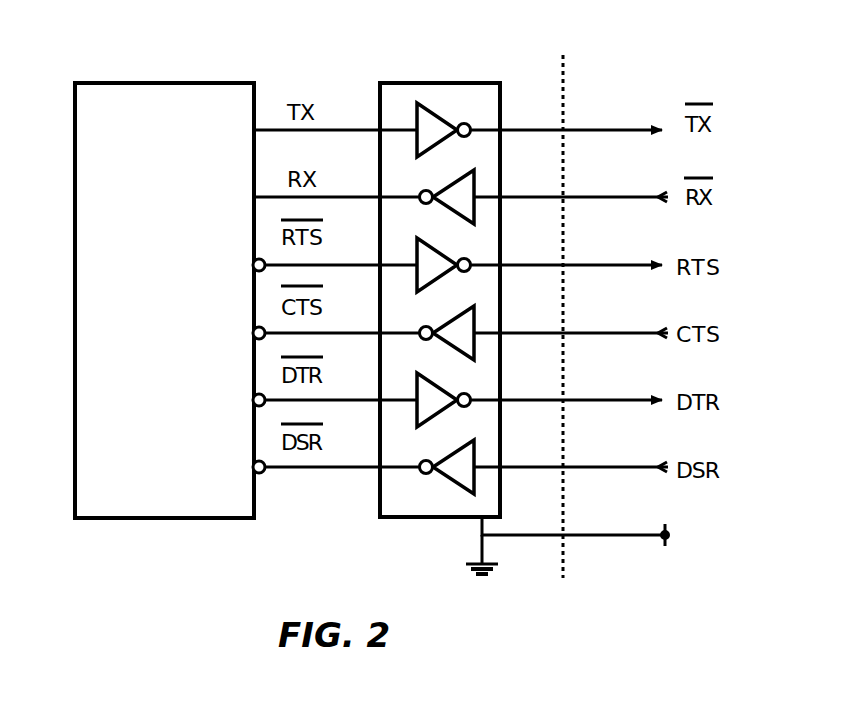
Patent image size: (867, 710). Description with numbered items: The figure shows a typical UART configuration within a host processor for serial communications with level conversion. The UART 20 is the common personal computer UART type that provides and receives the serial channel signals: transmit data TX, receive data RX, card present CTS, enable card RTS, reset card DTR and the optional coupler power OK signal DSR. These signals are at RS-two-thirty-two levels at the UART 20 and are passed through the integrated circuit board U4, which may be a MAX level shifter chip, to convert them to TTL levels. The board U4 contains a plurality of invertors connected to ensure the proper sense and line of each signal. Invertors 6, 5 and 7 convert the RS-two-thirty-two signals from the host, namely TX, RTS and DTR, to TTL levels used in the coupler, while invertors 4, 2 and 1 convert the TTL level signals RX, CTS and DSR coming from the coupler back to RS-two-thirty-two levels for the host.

The UART 20 is at (199, 518).
The integrated circuit board U4 is at (447, 518).
The invertor 6 is at (444, 115).
The invertor 4 is at (455, 178).
The invertor 5 is at (433, 252).
The invertor 2 is at (453, 316).
The invertor 7 is at (419, 378).
The invertor 1 is at (453, 448).